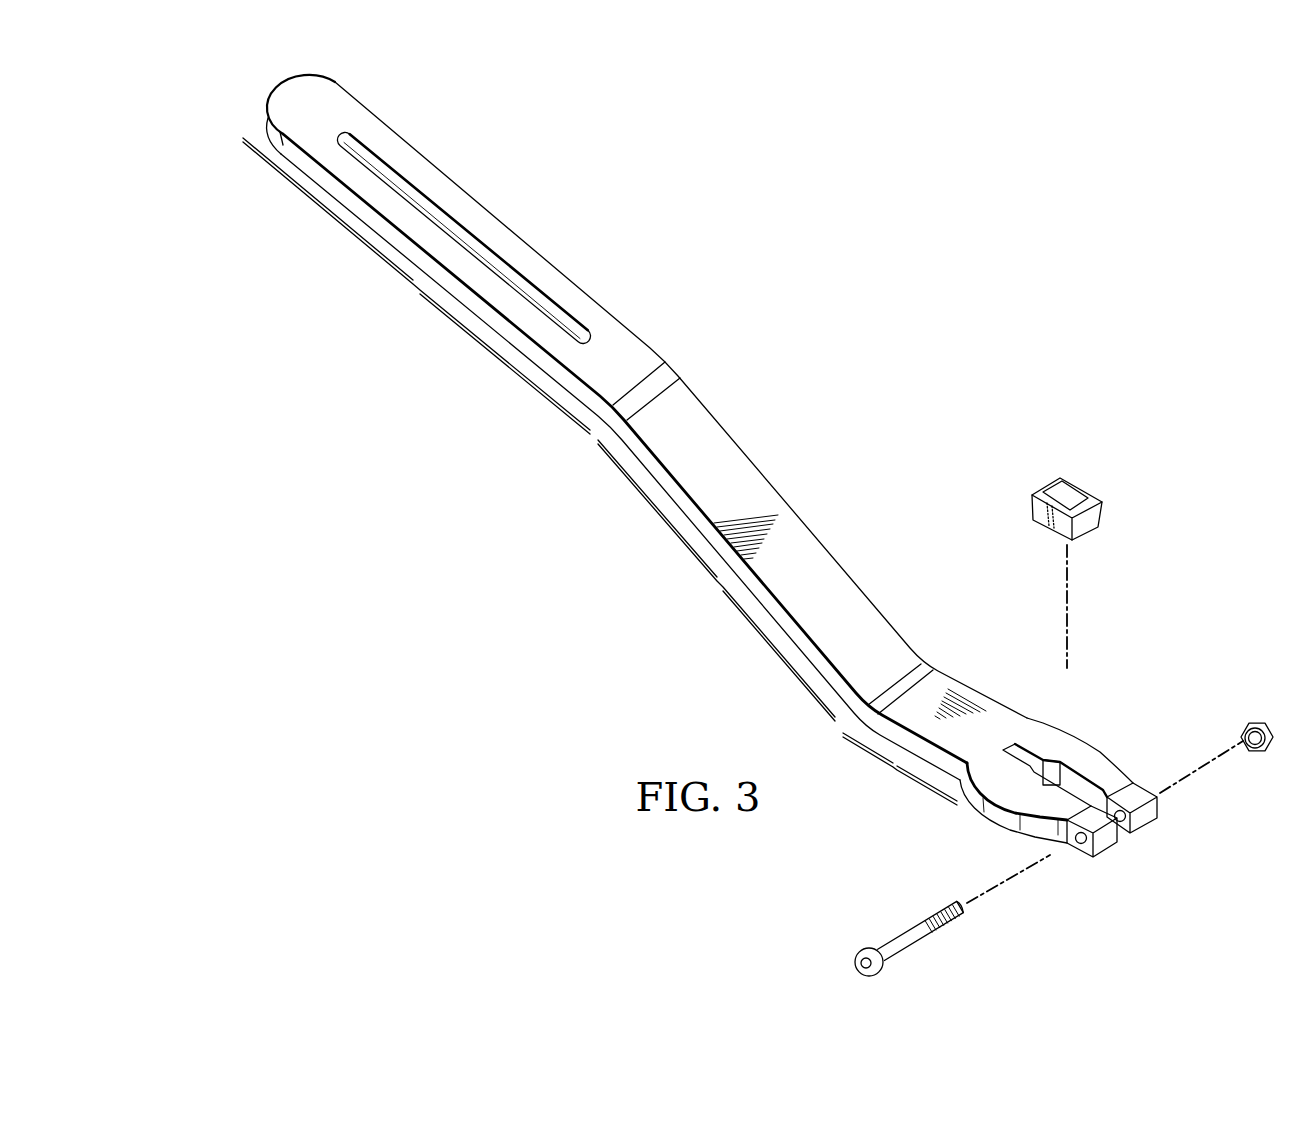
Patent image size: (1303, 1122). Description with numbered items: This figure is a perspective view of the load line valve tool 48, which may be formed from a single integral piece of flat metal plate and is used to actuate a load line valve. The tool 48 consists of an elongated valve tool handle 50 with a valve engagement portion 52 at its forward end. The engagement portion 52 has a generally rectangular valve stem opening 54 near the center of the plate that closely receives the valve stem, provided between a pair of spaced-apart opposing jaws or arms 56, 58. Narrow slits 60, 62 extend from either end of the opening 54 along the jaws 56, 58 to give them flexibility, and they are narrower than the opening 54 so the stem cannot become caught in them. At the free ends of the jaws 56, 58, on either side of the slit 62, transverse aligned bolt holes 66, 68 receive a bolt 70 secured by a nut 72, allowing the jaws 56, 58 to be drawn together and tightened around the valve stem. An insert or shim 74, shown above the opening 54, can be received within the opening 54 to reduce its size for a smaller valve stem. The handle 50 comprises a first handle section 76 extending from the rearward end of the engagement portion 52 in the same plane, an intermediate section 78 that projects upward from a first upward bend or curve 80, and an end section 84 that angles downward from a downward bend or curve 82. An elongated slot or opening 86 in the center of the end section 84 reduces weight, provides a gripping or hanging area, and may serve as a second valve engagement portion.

The load line valve tool 48 is at (872, 424).
The valve tool handle 50 is at (574, 279).
The valve engagement portion 52 is at (998, 826).
The valve stem opening 54 is at (1078, 785).
The jaw or arm 56 is at (1000, 797).
The jaw or arm 58 is at (1056, 738).
The slit 60 is at (1018, 742).
The slit 62 is at (1104, 792).
The bolt hole 66 is at (1074, 850).
The bolt hole 68 is at (1142, 798).
The bolt 70 is at (910, 948).
The nut 72 is at (1262, 722).
The insert or shim 74 is at (1087, 495).
The first handle section 76 is at (892, 772).
The intermediate section 78 is at (713, 582).
The first upward bend or curve 80 is at (907, 676).
The downward bend or curve 82 is at (657, 387).
The end section 84 is at (415, 291).
The elongated slot or opening 86 is at (459, 229).